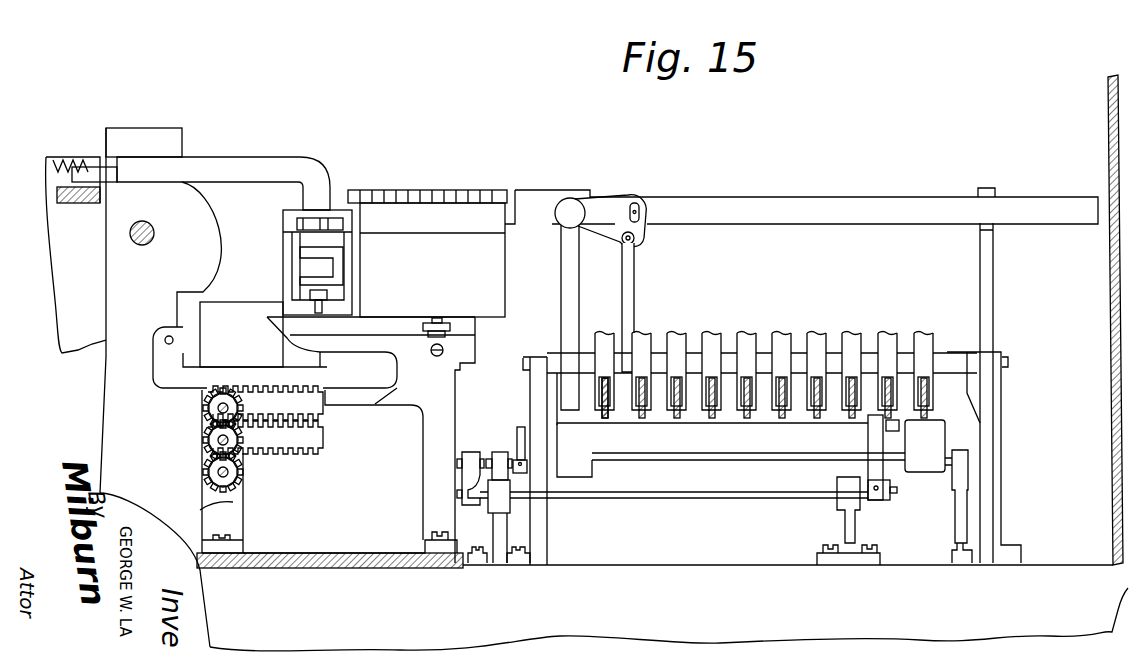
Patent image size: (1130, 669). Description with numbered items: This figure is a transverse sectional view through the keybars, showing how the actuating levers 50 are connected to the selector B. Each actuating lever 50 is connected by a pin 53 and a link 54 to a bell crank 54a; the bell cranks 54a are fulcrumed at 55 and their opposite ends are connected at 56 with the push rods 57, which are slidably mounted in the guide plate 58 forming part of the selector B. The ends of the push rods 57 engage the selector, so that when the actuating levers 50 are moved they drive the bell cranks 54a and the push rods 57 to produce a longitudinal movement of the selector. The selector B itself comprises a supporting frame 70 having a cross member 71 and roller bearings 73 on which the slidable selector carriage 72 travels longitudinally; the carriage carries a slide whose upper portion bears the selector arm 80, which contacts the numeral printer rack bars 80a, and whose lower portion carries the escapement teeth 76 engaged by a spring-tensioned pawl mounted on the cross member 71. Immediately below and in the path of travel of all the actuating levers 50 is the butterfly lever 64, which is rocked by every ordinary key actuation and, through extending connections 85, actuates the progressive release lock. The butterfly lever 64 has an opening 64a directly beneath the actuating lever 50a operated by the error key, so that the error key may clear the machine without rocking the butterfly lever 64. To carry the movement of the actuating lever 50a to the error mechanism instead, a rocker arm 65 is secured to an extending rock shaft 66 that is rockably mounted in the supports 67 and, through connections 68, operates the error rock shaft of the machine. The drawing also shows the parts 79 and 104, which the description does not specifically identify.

The selector B is at (288, 146).
The selector arm 80 is at (207, 167).
The numeral printer rack bars 80a is at (72, 200).
The block 79 is at (233, 312).
The selector carriage 72 is at (287, 245).
The latch member 104 is at (335, 265).
The escapement teeth 76 is at (320, 312).
The roller bearings 73 is at (430, 322).
The guide plate 58 is at (462, 213).
The push rods 57 is at (732, 209).
The links 54 is at (565, 275).
The bell cranks 54a is at (602, 222).
The connection point 56 is at (641, 210).
The fulcrum 55 is at (636, 238).
The actuating levers 50 is at (570, 415).
The actuating lever 50a is at (890, 387).
The pins 53 is at (610, 405).
The butterfly lever 64 is at (697, 443).
The opening 64a is at (895, 433).
The rocker arm 65 is at (877, 470).
The rock shaft 66 is at (763, 490).
The supports 67 is at (847, 520).
The connections 68 is at (500, 452).
The connections 85 is at (520, 427).
The supporting frame 70 is at (235, 529).
The cross member 71 is at (353, 397).